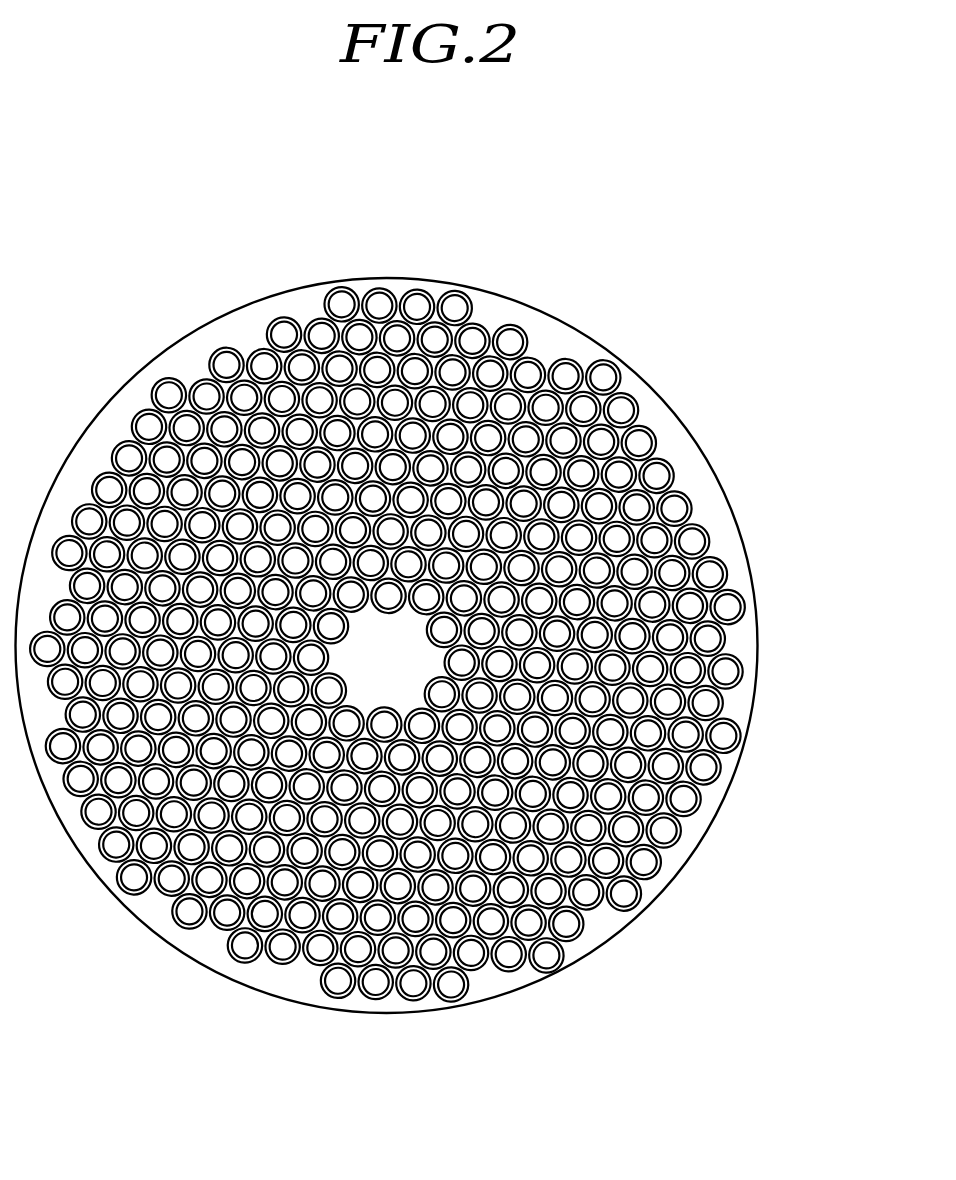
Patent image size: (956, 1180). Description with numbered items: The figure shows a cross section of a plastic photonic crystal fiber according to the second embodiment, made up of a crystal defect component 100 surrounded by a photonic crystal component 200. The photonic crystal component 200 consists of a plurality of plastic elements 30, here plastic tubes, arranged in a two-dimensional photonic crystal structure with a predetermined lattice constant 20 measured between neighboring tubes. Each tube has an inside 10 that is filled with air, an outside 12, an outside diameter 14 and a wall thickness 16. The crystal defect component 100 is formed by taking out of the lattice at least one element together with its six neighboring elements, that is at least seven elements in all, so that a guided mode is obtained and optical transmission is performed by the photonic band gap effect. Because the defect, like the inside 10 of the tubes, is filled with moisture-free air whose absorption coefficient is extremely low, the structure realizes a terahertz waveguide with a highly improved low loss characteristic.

The inside of plastic element 10 is at (530, 373).
The outside of plastic element 12 is at (703, 530).
The outside diameter of plastic element 14 is at (283, 1043).
The thickness of wall of plastic element 16 is at (462, 978).
The lattice constant 20 is at (379, 305).
The plurality of plastic elements 30 is at (728, 672).
The crystal defect component 100 is at (386, 658).
The photonic crystal component 200 is at (680, 818).